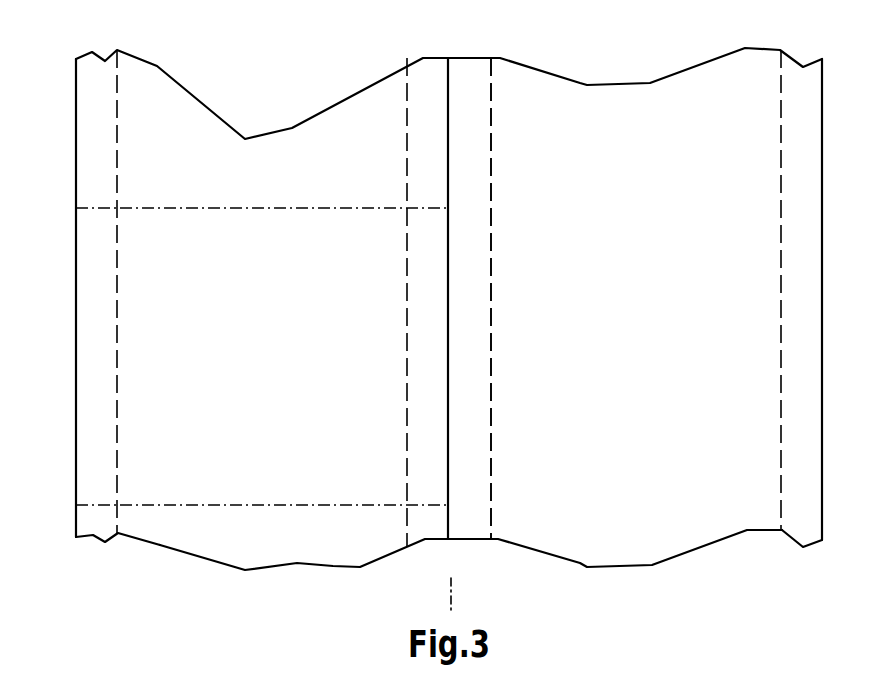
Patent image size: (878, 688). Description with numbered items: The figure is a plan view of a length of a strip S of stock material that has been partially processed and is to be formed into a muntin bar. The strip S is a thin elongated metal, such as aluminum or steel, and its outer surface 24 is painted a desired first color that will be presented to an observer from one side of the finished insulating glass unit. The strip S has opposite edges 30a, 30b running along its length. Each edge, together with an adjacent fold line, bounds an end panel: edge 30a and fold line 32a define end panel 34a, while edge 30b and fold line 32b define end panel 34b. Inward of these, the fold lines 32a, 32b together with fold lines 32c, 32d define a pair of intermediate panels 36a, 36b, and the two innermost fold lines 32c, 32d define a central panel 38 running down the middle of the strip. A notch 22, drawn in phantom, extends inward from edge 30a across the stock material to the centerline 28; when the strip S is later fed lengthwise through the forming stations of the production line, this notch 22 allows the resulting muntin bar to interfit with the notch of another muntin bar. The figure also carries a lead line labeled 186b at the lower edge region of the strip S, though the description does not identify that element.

The strip S is at (829, 99).
The notch 22 is at (160, 268).
The outer surface 24 is at (243, 526).
The centerline 28 is at (448, 87).
The edge 30a is at (75, 443).
The edge 30b is at (823, 397).
The fold line 32a is at (120, 382).
The fold line 32b is at (780, 372).
The fold line 32c is at (407, 427).
The fold line 32d is at (492, 433).
The end panel 34a is at (97, 520).
The end panel 34b is at (800, 458).
The intermediate panel 36a is at (183, 133).
The intermediate panel 36b is at (620, 117).
The central panel 38 is at (472, 102).
The bottom edge 186b is at (610, 543).